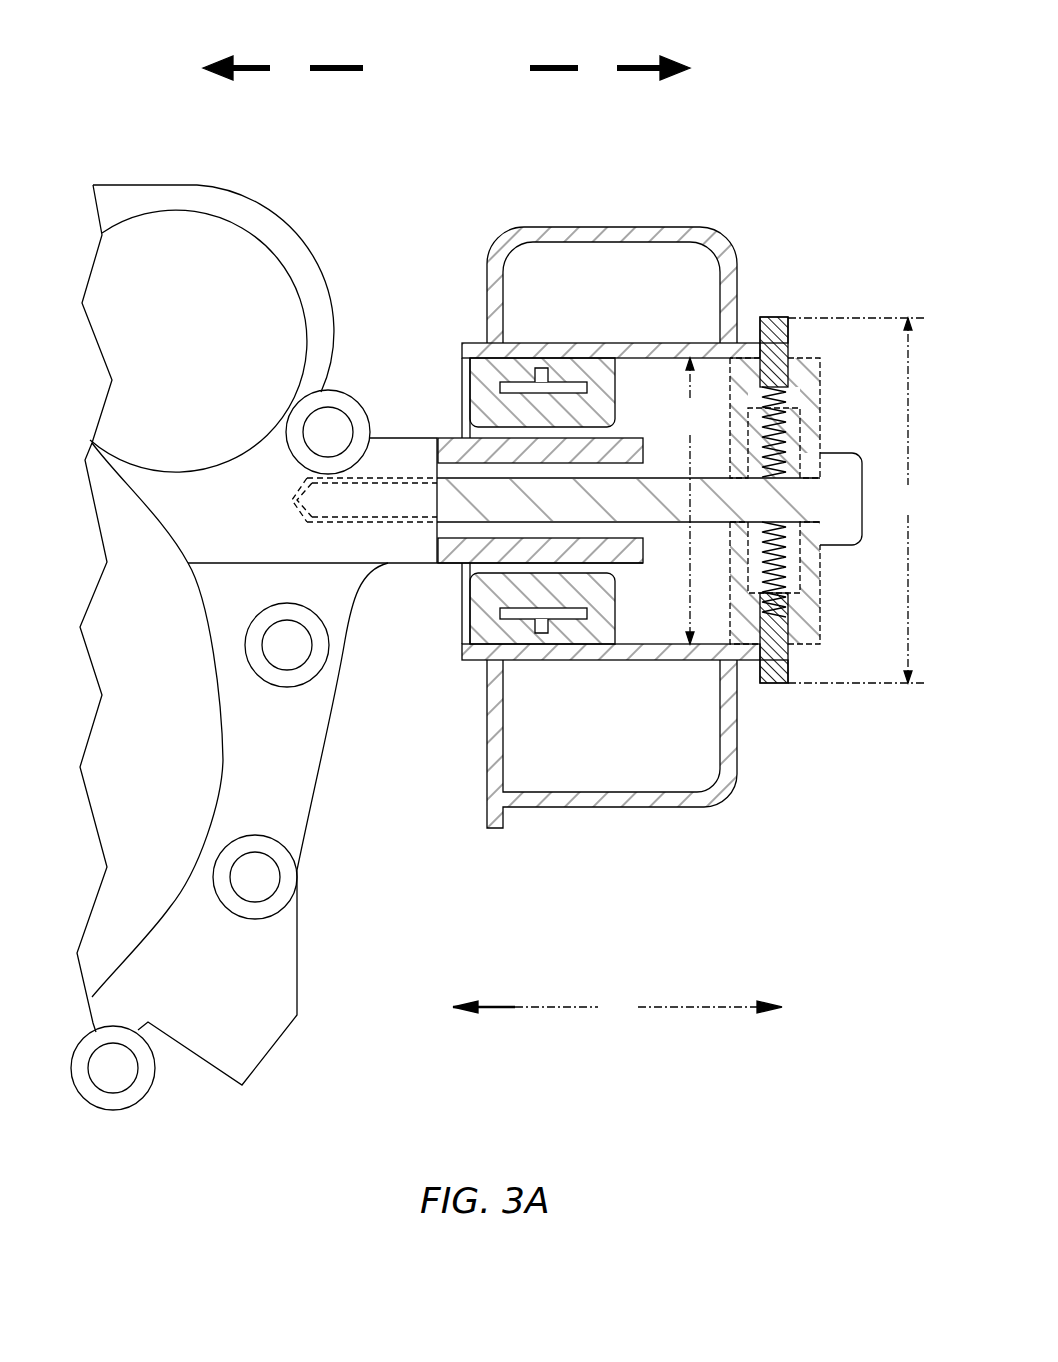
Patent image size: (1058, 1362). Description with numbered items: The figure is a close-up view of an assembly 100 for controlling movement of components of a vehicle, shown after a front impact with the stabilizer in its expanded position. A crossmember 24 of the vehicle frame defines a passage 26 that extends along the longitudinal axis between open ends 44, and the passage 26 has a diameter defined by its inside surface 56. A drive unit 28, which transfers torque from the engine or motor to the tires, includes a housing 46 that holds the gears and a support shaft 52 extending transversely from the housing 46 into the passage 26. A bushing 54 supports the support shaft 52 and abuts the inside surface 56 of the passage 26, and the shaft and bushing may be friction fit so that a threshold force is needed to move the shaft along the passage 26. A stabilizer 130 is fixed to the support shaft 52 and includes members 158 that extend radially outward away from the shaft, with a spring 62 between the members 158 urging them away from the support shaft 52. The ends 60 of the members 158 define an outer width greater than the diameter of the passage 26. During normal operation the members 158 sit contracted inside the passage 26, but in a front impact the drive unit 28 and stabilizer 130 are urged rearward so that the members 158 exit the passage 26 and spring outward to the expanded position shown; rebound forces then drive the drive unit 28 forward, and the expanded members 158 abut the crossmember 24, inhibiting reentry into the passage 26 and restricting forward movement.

The assembly 100 is at (826, 64).
The crossmember 24 is at (578, 227).
The passage 26 is at (630, 630).
The drive unit 28 is at (243, 196).
The open ends 44 is at (463, 598).
The housing 46 is at (165, 228).
The support shaft 52 is at (450, 556).
The bushing 54 is at (478, 392).
The inside surface 56 is at (652, 630).
The ends 60 is at (776, 317).
The spring 62 is at (787, 423).
The stabilizer 130 is at (803, 375).
The members 158 is at (775, 330).